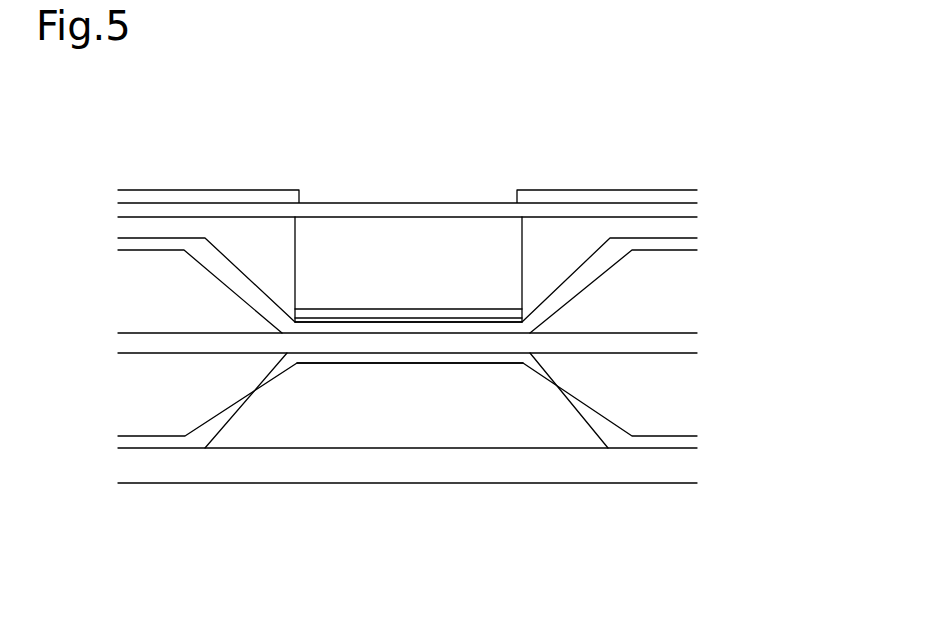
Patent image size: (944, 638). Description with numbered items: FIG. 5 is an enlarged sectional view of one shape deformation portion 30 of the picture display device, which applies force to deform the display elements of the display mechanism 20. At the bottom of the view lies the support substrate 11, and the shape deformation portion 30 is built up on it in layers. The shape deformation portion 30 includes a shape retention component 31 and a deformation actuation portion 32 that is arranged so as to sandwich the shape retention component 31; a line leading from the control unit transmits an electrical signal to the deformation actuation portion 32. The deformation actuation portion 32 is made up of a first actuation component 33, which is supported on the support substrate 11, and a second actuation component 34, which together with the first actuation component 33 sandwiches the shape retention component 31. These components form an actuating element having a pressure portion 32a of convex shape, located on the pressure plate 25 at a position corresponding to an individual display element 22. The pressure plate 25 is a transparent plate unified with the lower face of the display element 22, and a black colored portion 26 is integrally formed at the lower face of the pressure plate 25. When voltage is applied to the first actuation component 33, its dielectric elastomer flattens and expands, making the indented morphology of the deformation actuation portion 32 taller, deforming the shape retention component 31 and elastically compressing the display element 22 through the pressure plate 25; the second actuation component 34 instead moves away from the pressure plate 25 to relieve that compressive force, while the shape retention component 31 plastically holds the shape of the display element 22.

The support substrate 11 is at (683, 472).
The display mechanism 20 is at (342, 118).
The display element 22 is at (360, 228).
The pressure plate 25 is at (442, 313).
The colored portion 26 is at (313, 318).
The shape deformation portion 30 is at (824, 302).
The shape retention component 31 is at (654, 335).
The deformation actuation portion 32 is at (771, 362).
The pressure portion 32a is at (423, 328).
The first actuation component 33 is at (650, 438).
The second actuation component 34 is at (586, 275).